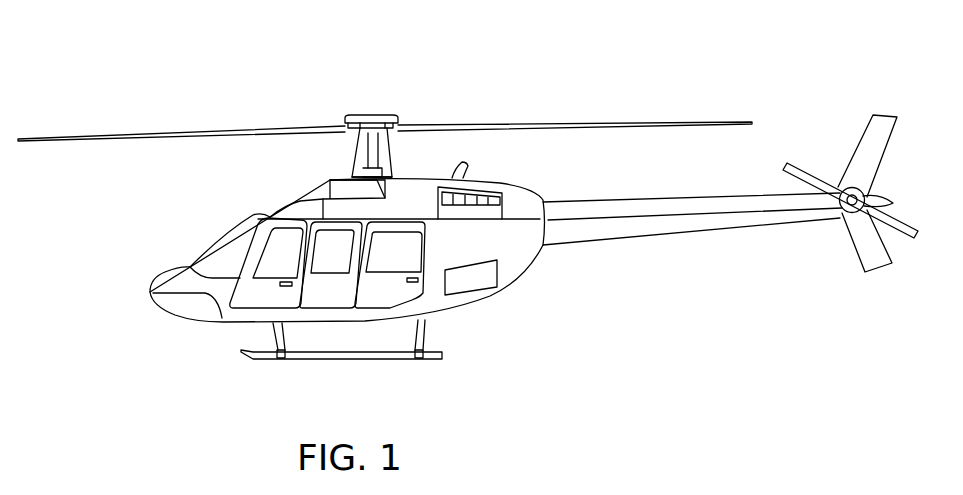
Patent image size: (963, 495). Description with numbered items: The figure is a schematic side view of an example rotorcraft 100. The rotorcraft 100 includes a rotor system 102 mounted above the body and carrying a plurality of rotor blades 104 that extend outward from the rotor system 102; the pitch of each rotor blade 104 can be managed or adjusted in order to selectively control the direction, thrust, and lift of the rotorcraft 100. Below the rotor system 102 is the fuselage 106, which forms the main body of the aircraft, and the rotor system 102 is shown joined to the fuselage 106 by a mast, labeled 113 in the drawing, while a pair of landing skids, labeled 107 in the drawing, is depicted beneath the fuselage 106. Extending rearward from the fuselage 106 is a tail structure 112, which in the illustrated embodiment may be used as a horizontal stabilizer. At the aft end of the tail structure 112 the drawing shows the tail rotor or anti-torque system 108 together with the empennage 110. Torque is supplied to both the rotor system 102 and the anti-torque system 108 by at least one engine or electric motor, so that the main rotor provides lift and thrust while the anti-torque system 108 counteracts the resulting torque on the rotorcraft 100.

The rotorcraft 100 is at (196, 70).
The rotor system 102 is at (372, 104).
The rotor blades 104 is at (565, 123).
The fuselage 106 is at (185, 320).
The landing skids 107 is at (348, 360).
The tail rotor or anti-torque system 108 is at (852, 217).
The empennage 110 is at (885, 106).
The tail structure 112 is at (667, 238).
The rotor mast 113 is at (353, 163).